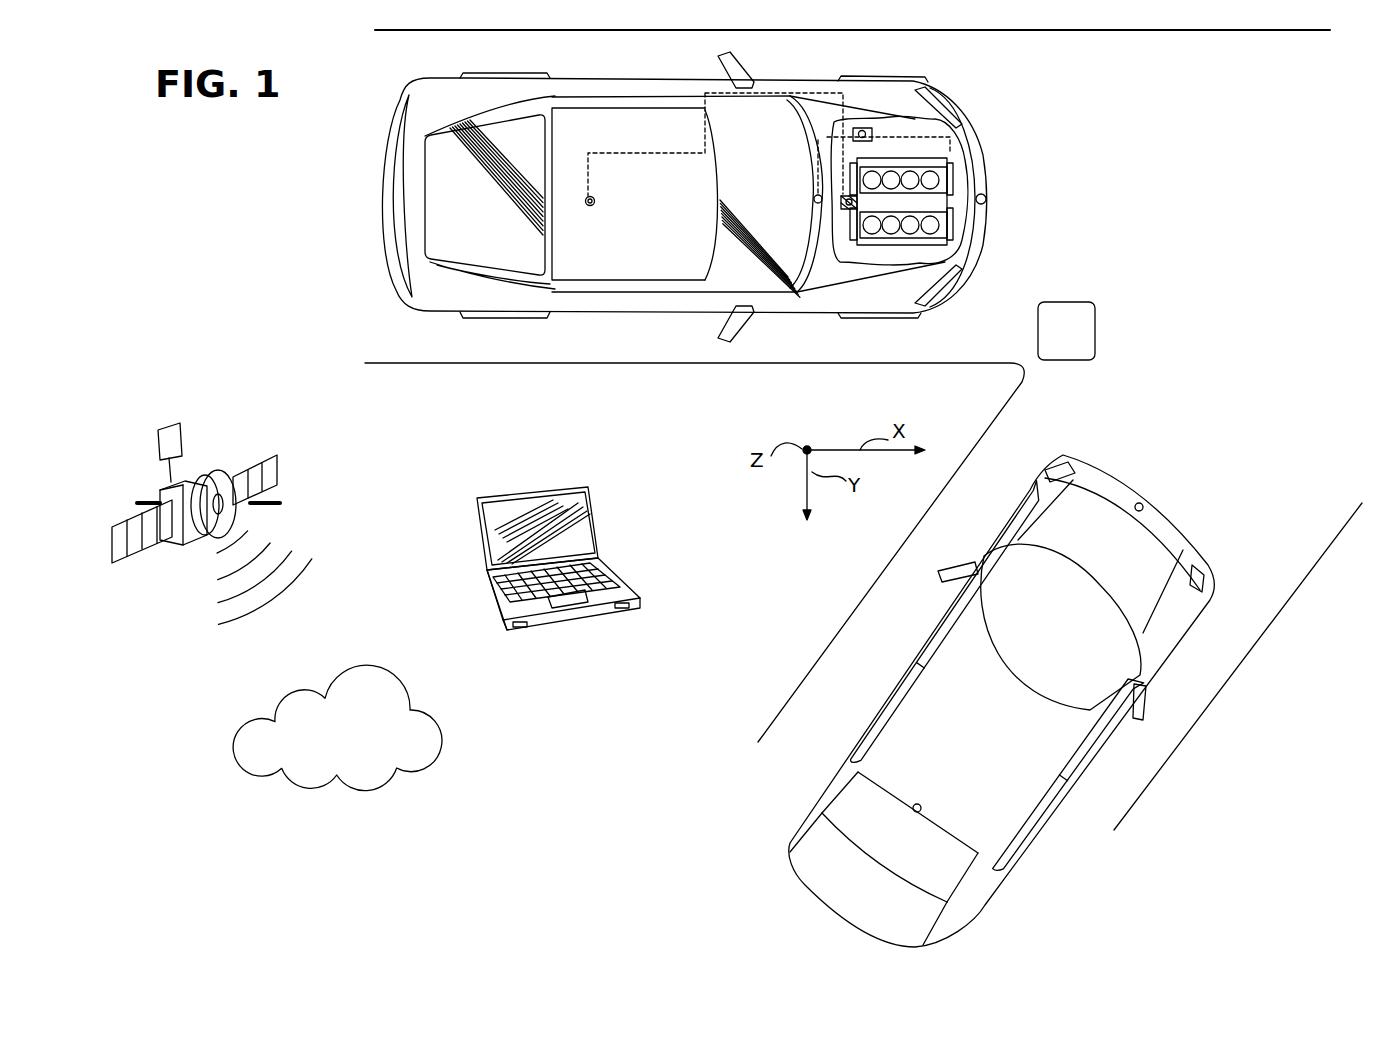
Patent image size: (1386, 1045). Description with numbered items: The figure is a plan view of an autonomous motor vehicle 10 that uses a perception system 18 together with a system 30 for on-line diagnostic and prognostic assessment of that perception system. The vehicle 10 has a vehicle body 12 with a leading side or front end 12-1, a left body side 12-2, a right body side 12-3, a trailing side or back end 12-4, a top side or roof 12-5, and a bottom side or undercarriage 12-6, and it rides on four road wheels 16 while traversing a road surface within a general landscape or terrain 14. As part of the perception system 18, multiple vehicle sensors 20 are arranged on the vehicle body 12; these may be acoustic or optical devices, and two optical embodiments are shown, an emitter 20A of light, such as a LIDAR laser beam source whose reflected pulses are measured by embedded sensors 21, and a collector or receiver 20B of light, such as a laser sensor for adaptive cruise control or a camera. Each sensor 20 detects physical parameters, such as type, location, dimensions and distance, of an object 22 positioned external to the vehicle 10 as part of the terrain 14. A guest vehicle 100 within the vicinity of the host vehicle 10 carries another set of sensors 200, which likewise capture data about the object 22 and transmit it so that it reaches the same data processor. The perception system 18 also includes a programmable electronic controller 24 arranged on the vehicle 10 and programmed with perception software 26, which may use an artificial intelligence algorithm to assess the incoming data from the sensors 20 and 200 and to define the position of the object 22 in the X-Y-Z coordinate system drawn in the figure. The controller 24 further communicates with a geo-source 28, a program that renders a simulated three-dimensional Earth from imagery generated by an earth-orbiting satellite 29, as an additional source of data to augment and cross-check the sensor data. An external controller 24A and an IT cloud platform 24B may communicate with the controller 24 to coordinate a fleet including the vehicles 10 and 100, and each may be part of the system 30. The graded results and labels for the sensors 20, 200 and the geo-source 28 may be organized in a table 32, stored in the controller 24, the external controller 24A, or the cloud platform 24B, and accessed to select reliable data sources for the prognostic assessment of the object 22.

The autonomous motor vehicle 10 is at (692, 201).
The vehicle body 12 is at (657, 125).
The front end 12-1 is at (980, 137).
The left body side 12-2 is at (628, 77).
The right body side 12-3 is at (615, 316).
The back end 12-4 is at (388, 257).
The roof 12-5 is at (667, 231).
The undercarriage 12-6 is at (466, 284).
The terrain 14 is at (1262, 226).
The road wheels 16 is at (548, 73).
The perception system 18 is at (784, 312).
The vehicle sensors 20 is at (814, 199).
The emitter 20A is at (590, 206).
The collector/receiver 20B is at (984, 206).
The embedded sensors 21 is at (594, 198).
The object 22 is at (1079, 341).
The electronic controller 24 is at (868, 127).
The external controller 24A is at (599, 555).
The IT cloud platform 24B is at (360, 751).
The perception software 26 is at (872, 141).
The geo-source 28 is at (568, 531).
The earth-orbiting satellite 29 is at (280, 474).
The system for on-line diagnostic and prognostic assessment 30 is at (672, 665).
The table 32 is at (957, 181).
The guest vehicle 100 is at (1003, 656).
The non-vehicle sensors 200 is at (1143, 504).